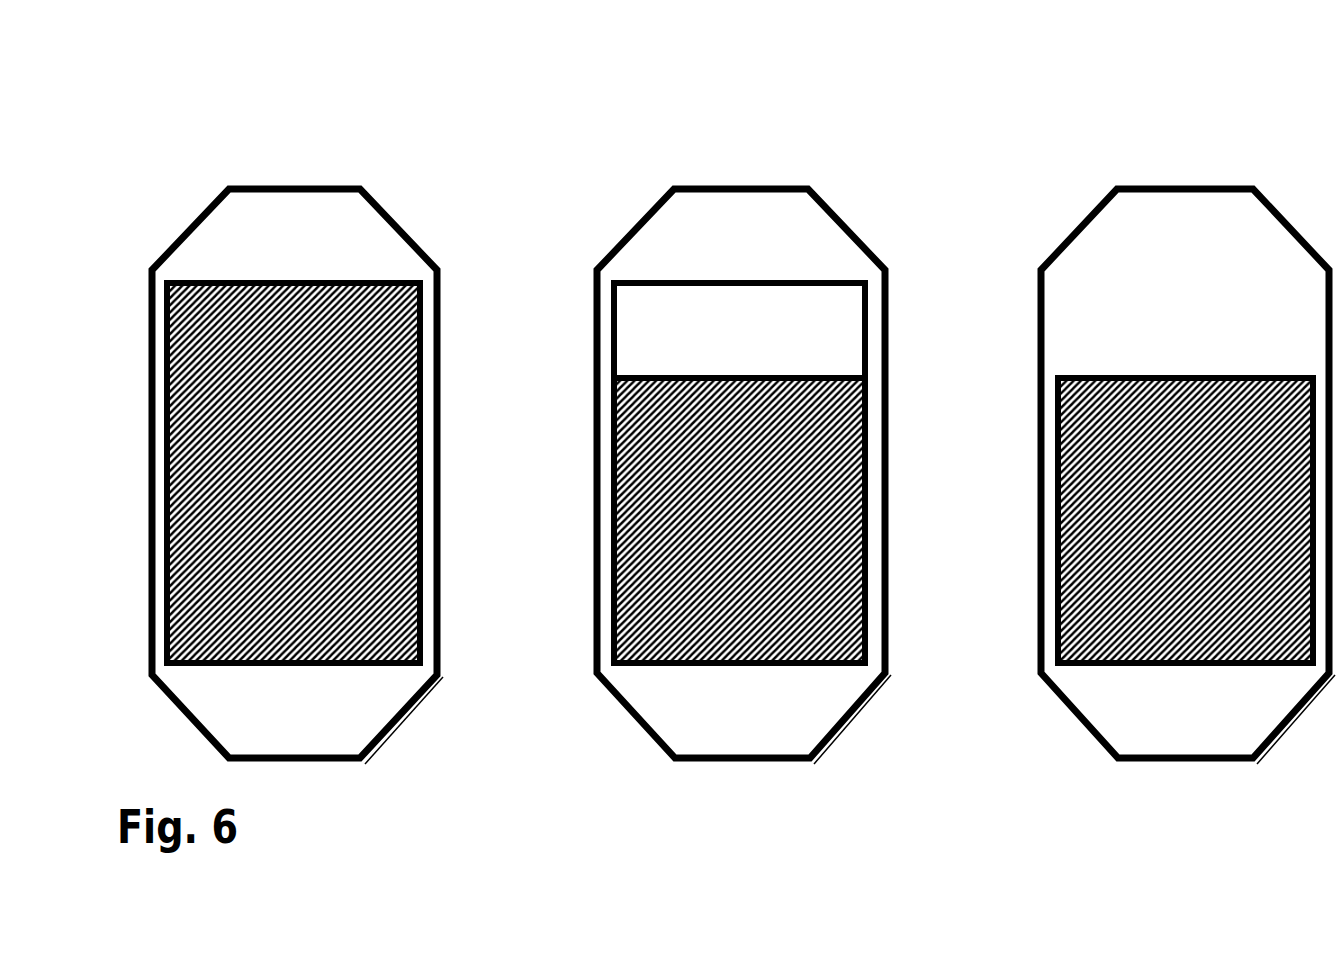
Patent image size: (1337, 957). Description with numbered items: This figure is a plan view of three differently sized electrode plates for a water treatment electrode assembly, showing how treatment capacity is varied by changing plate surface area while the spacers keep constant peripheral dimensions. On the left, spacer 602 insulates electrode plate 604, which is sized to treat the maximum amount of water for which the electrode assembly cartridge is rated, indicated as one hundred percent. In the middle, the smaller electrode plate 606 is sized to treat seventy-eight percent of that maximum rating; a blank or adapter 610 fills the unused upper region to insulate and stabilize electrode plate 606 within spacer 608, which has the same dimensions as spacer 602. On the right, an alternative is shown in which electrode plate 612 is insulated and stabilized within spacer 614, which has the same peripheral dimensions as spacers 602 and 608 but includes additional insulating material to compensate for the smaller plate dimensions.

The spacer 602 is at (398, 227).
The electrode plate 604 is at (312, 665).
The electrode plate 606 is at (742, 665).
The spacer 608 is at (724, 188).
The adapter 610 is at (784, 344).
The electrode plate 612 is at (1183, 665).
The spacer 614 is at (1080, 228).